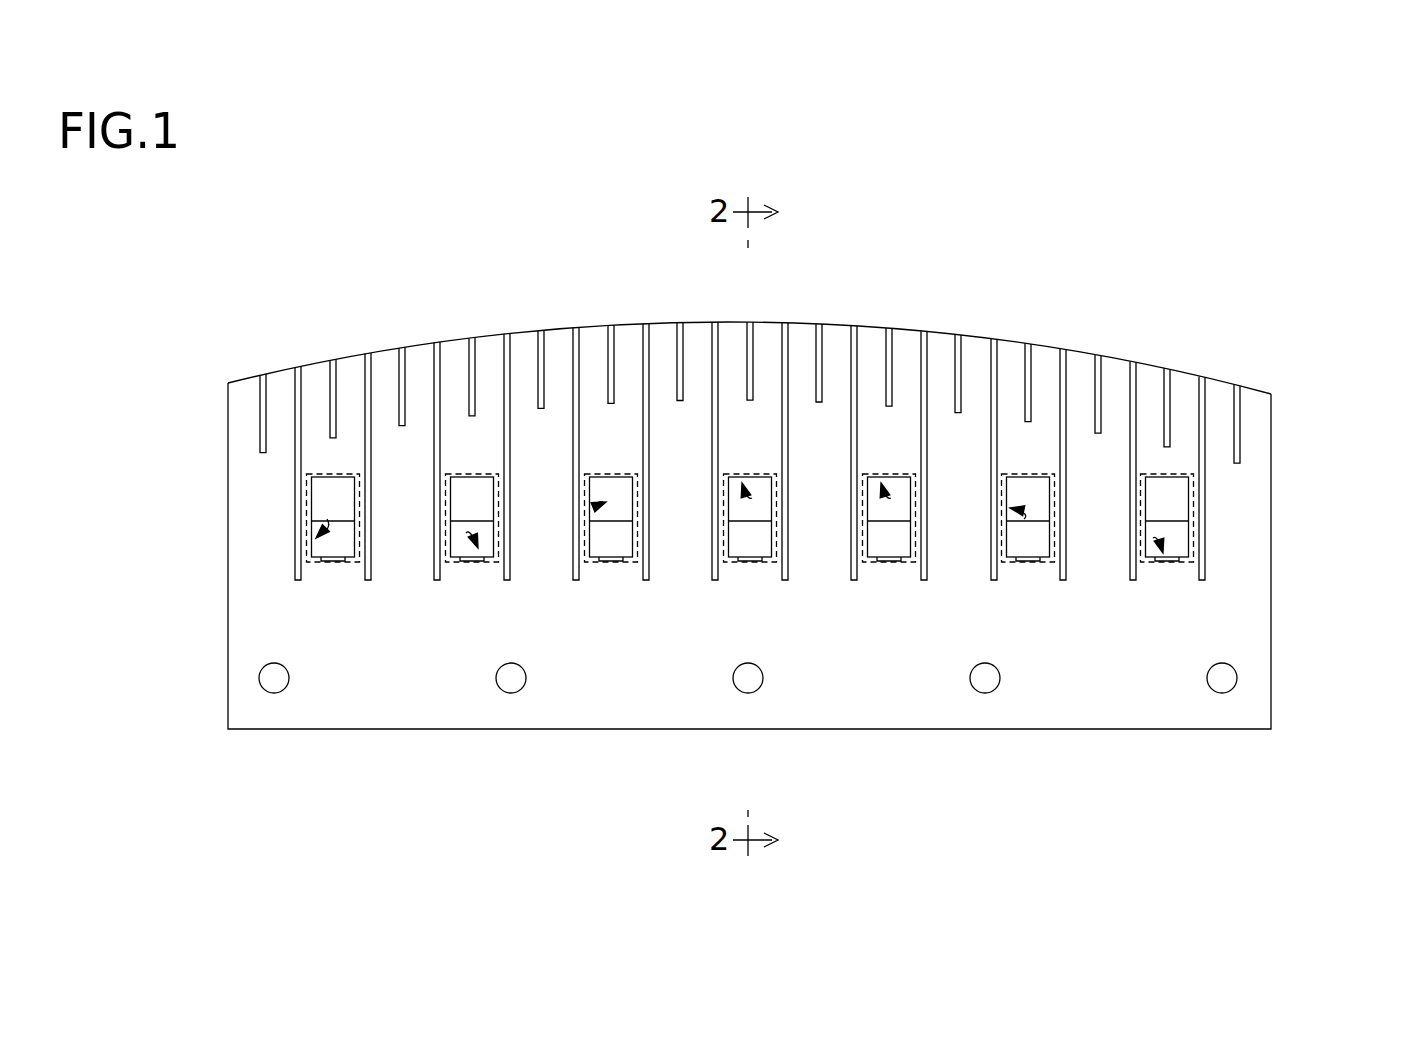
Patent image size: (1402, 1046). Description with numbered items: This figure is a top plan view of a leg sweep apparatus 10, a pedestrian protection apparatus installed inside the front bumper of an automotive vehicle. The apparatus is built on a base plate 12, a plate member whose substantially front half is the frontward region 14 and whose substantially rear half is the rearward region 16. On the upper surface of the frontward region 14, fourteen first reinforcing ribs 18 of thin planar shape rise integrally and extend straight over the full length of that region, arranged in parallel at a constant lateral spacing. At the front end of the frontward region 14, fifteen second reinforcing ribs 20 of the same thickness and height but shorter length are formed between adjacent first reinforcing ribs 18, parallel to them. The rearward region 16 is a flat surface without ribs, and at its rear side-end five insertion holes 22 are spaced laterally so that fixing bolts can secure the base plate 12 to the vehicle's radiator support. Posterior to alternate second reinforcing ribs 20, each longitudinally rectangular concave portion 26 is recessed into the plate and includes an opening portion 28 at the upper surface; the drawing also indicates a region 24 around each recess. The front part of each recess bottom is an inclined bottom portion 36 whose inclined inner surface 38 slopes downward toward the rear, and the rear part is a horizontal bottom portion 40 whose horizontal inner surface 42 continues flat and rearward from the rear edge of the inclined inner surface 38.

The leg sweep apparatus 10 is at (942, 294).
The base plate 12 is at (141, 586).
The frontward region 14 is at (211, 518).
The rearward region 16 is at (211, 677).
The first reinforcing ribs 18 is at (295, 420).
The second reinforcing ribs 20 is at (260, 420).
The insertion holes 22 is at (270, 693).
The element mounting region (dashed outline) 24 is at (345, 563).
The concave portion 26 is at (327, 519).
The opening portion 28 is at (354, 511).
The inclined bottom portion 36 is at (778, 472).
The inclined inner surface 38 is at (325, 495).
The horizontal bottom portion 40 is at (846, 553).
The horizontal inner surface 42 is at (335, 537).